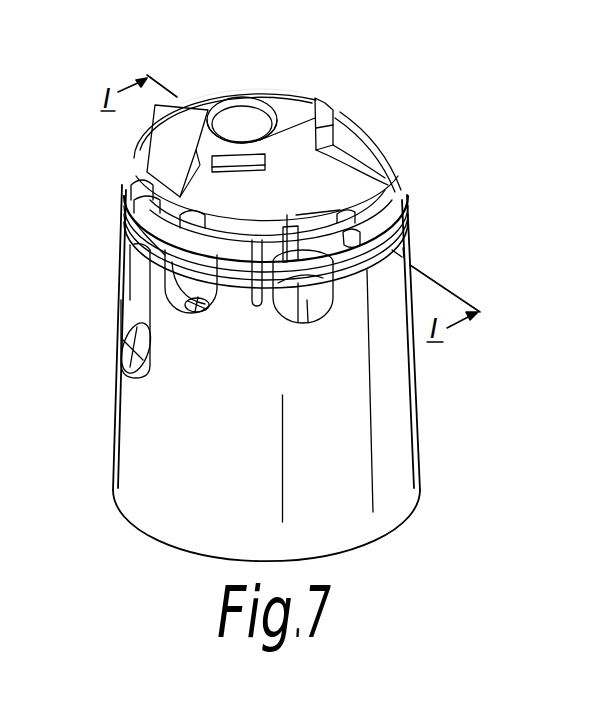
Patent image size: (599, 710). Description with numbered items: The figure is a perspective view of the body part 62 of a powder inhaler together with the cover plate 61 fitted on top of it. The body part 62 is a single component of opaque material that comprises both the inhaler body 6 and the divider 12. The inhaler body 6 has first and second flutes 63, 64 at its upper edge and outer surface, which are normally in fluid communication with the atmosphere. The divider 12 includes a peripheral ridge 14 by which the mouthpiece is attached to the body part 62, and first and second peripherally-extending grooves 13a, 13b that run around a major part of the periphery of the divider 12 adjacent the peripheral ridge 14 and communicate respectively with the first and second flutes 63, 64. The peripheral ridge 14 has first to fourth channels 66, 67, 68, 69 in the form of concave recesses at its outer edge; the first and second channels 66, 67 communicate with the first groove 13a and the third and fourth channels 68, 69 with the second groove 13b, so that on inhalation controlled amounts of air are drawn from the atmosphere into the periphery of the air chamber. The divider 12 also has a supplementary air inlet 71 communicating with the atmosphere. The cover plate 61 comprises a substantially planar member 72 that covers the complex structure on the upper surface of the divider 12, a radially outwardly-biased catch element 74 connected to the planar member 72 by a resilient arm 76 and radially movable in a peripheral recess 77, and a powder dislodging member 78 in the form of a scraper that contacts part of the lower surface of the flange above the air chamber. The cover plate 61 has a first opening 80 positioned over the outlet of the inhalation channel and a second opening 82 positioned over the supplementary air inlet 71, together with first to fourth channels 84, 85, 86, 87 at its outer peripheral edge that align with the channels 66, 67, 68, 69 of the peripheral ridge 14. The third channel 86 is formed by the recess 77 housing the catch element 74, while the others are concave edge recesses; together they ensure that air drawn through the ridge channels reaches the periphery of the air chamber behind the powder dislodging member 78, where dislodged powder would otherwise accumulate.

The inhaler body 6 is at (362, 492).
The divider 12 is at (358, 130).
The first peripherally-extending groove 13a is at (130, 262).
The second peripherally-extending groove 13b is at (402, 237).
The peripheral ridge 14 is at (388, 195).
The cover plate 61 is at (235, 88).
The body part 62 is at (433, 418).
The first flute 63 is at (210, 317).
The second flute 64 is at (320, 303).
The first channel 66 is at (130, 207).
The second channel 67 is at (155, 300).
The third channel 68 is at (300, 320).
The fourth channel 69 is at (353, 238).
The supplementary air inlet 71 is at (357, 153).
The planar member 72 is at (293, 110).
The catch element 74 is at (268, 305).
The resilient arm 76 is at (253, 280).
The peripheral recess 77 is at (300, 212).
The powder dislodging member 78 is at (190, 130).
The first opening 80 is at (256, 98).
The second opening 82 is at (332, 108).
The first channel 84 is at (132, 187).
The second channel 85 is at (205, 212).
The third channel 86 is at (283, 228).
The fourth channel 87 is at (358, 220).